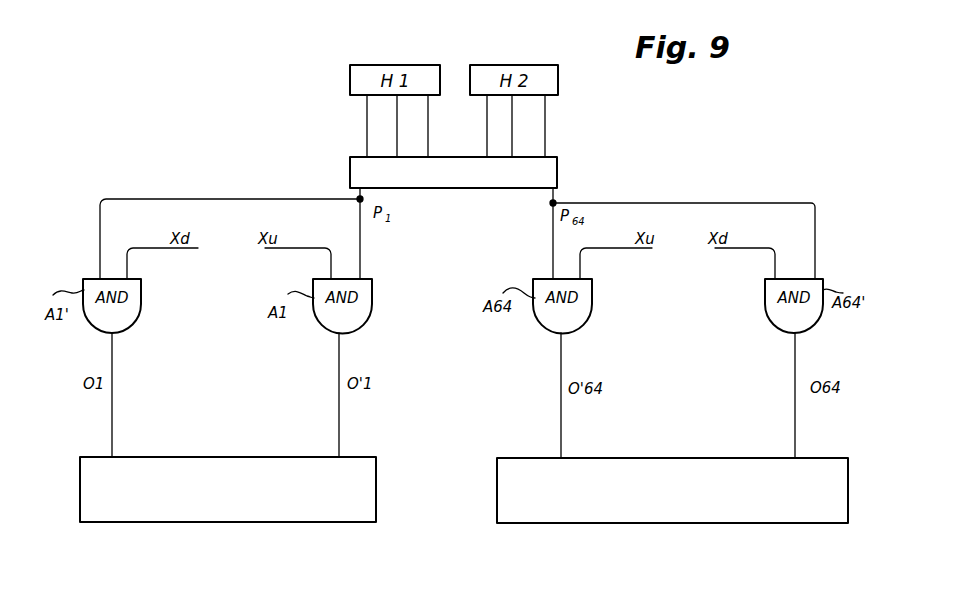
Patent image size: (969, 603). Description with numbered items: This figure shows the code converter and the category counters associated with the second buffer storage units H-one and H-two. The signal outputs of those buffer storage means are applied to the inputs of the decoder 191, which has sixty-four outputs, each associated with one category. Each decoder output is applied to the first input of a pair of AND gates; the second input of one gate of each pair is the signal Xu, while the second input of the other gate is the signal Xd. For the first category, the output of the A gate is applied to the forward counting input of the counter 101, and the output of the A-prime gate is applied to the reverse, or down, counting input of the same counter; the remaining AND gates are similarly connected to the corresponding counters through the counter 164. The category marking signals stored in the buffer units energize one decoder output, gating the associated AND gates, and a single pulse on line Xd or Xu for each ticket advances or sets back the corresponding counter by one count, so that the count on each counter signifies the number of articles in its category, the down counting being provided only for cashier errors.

The decoder 191 is at (356, 173).
The counter 101 is at (237, 510).
The counter 164 is at (773, 508).